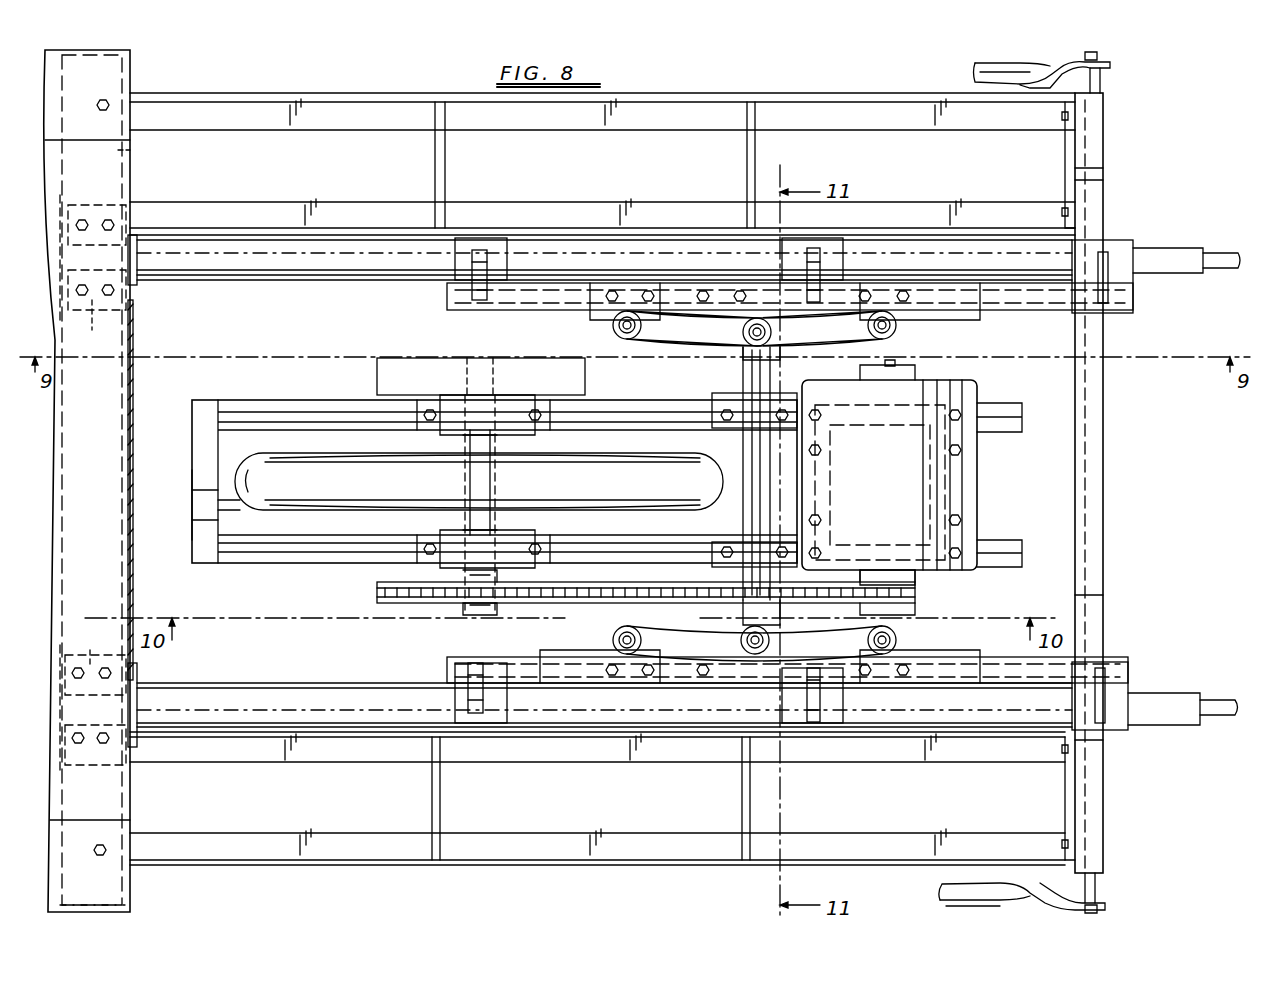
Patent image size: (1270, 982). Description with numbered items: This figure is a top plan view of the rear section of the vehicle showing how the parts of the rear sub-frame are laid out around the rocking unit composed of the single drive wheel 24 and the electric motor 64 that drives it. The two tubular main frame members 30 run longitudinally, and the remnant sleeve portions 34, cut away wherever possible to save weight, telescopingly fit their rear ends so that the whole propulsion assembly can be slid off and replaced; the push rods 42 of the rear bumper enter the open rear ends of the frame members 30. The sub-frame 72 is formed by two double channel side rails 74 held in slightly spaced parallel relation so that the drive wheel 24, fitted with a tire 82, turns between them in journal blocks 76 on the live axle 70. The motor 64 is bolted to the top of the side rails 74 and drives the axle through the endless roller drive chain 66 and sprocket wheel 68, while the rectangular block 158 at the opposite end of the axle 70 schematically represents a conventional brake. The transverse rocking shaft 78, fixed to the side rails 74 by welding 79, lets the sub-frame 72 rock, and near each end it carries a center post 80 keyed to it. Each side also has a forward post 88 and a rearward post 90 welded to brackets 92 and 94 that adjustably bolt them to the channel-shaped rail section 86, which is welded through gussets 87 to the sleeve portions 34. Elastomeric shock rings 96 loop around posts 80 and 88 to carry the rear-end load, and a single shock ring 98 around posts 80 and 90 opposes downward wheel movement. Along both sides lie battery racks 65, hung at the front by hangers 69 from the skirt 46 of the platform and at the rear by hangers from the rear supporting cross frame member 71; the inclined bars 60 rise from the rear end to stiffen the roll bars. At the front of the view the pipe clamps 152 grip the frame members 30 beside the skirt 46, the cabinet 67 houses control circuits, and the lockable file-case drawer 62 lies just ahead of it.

The single drive wheel 24 is at (675, 470).
The main frame member 30 is at (1183, 278).
The remnant sleeve portion 34 is at (390, 260).
The push rod 42 is at (1230, 275).
The skirt 46 is at (130, 888).
The inclined bar 60 is at (972, 72).
The sliding file-case drawer 62 is at (100, 568).
The electric motor 64 is at (900, 490).
The battery rack 65 is at (395, 120).
The drive chain 66 is at (618, 600).
The cabinet 67 is at (135, 395).
The sprocket wheel 68 is at (420, 605).
The front hanger 69 is at (130, 165).
The live axle 70 is at (470, 608).
The rear supporting cross frame member 71 is at (1103, 568).
The sub-frame 72 is at (185, 508).
The double channel side rail 74 is at (345, 560).
The journal block 76 is at (515, 428).
The rocking shaft 78 is at (740, 522).
The welding 79 is at (765, 560).
The upright post 80 is at (772, 333).
The tire 82 is at (310, 462).
The channel-shaped rail section 86 is at (520, 305).
The gusset 87 is at (478, 300).
The forward post 88 is at (620, 336).
The rearward post 90 is at (897, 328).
The bracket 92 is at (600, 322).
The bracket 94 is at (915, 316).
The elastomeric shock rings 96 is at (680, 346).
The shock ring 98 is at (800, 355).
The pipe clamp 152 is at (92, 482).
The brake block 158 is at (372, 376).